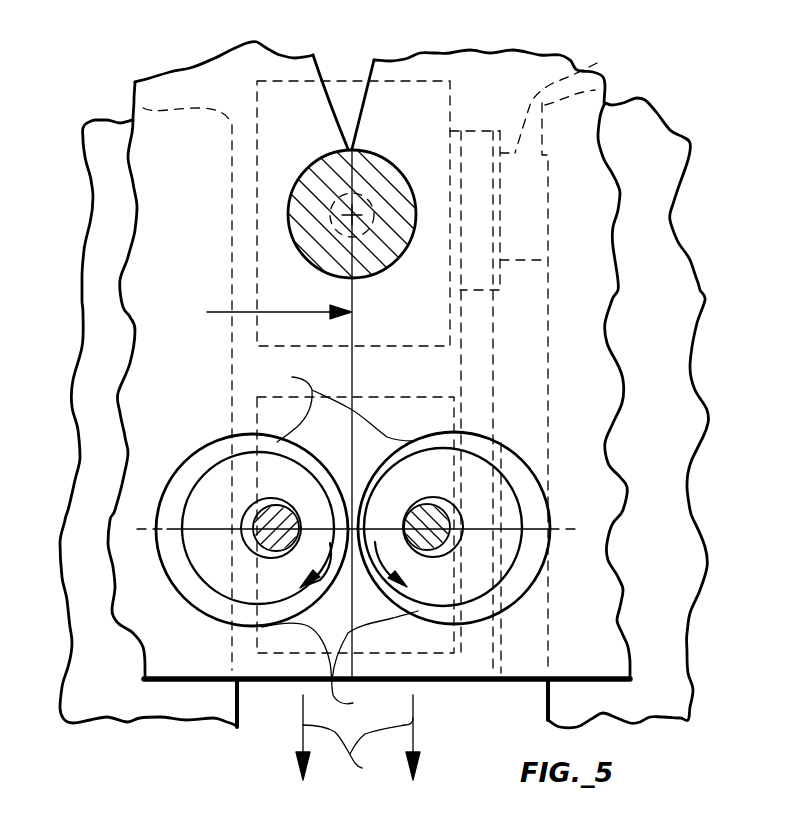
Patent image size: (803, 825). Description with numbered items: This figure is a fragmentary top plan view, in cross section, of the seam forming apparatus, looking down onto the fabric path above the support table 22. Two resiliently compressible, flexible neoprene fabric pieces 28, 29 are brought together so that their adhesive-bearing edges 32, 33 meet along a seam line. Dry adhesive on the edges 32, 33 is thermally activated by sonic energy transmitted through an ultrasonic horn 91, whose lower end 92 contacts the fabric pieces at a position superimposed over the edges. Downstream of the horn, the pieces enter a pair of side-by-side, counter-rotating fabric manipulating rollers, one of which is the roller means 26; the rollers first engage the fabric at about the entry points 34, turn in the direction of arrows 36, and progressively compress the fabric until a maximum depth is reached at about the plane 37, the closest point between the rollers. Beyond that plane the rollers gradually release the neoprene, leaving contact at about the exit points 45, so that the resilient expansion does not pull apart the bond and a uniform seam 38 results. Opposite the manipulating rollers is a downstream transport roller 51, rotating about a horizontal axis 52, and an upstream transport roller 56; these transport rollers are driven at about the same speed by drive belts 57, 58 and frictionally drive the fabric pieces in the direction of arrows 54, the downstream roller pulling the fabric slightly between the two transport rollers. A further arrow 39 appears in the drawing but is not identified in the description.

The support table 22 is at (97, 130).
The roller means 26 is at (203, 553).
The fabric piece 28 is at (128, 312).
The fabric piece 29 is at (542, 73).
The edge 32 is at (327, 62).
The edge 33 is at (373, 60).
The entry points 34 is at (335, 402).
The arrows 36 is at (328, 573).
The plane 37 is at (167, 530).
The seam 38 is at (335, 527).
The feed direction arrow 39 is at (262, 312).
The exit points 45 is at (340, 665).
The transport roller 51 is at (432, 395).
The horizontal axis 52 is at (547, 702).
The arrows 54 is at (358, 740).
The upstream transport roller 56 is at (350, 87).
The drive belt 57 is at (493, 423).
The drive belt 58 is at (587, 70).
The ultrasonic horn 91 is at (298, 175).
The lower end 92 is at (288, 230).